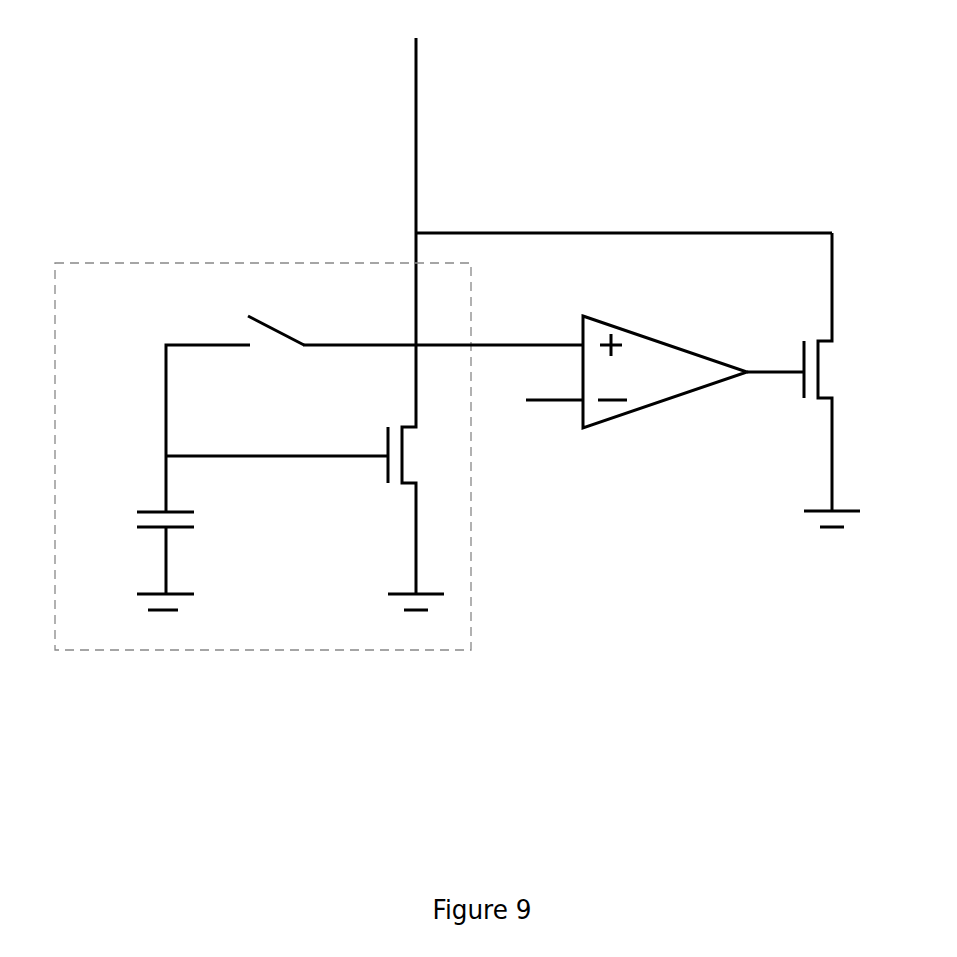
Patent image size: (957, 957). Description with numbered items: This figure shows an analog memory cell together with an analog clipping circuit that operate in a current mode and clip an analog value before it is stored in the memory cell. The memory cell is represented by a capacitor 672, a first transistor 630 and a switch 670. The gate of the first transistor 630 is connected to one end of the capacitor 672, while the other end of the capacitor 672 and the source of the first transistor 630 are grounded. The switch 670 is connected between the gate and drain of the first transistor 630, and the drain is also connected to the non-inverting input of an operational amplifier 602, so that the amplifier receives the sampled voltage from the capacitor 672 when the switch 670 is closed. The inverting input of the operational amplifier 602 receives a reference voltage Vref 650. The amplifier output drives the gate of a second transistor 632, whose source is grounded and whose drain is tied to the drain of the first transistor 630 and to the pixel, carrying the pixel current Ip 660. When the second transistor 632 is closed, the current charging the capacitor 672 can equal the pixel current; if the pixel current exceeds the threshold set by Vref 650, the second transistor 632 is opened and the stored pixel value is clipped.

The pixel current Ip 660 is at (400, 97).
The switch 670 is at (374, 386).
The capacitor 672 is at (187, 533).
The first transistor 630 is at (308, 477).
The operational amplifier 602 is at (665, 372).
The reference voltage Vref 650 is at (537, 413).
The second transistor 632 is at (835, 380).